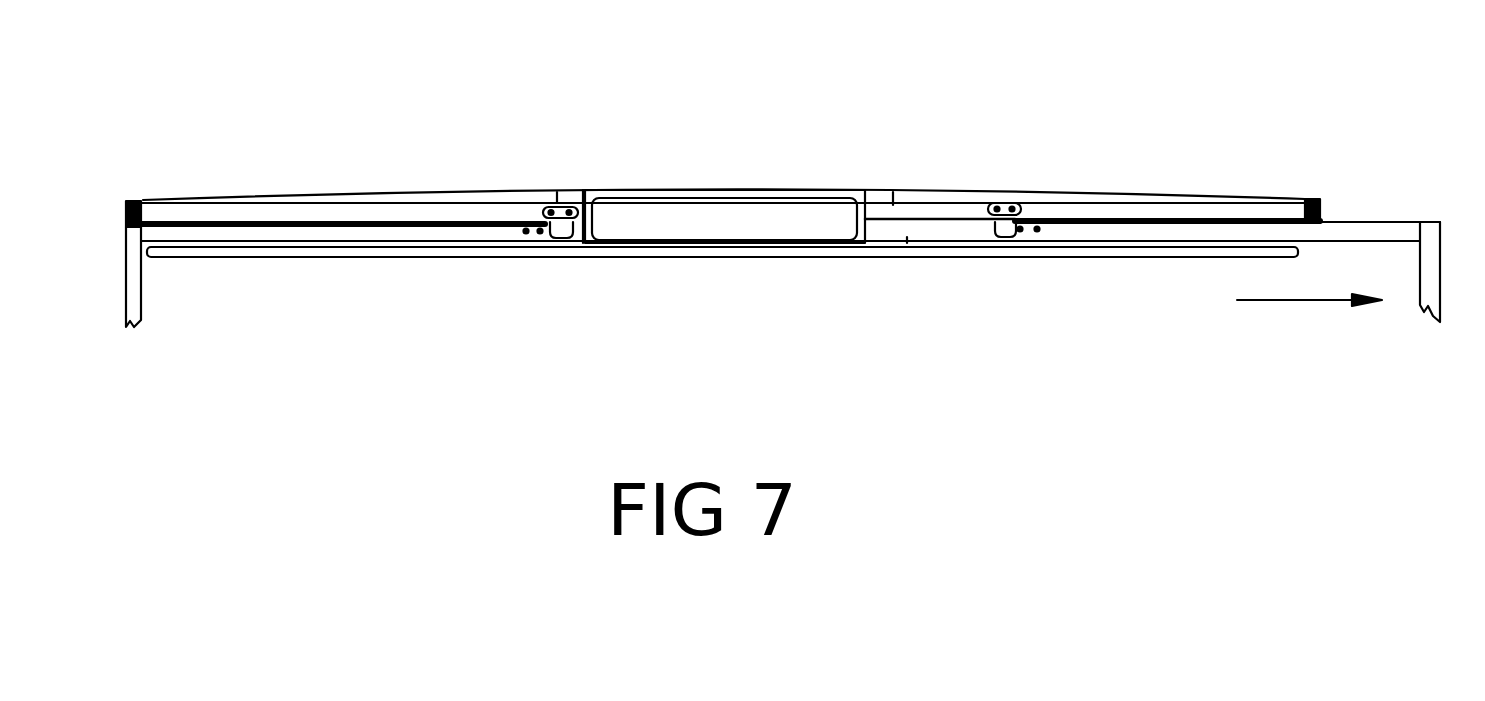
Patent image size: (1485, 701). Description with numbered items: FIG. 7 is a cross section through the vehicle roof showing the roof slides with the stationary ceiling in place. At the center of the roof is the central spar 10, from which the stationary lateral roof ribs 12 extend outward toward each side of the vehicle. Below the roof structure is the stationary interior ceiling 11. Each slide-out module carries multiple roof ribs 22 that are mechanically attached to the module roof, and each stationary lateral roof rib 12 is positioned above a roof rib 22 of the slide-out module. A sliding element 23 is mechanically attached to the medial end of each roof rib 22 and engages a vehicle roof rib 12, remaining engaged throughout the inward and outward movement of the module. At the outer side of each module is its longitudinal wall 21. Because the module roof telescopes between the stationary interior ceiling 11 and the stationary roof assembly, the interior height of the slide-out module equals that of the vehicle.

The central spar 10 is at (630, 218).
The interior ceiling 11 is at (616, 253).
The lateral roof ribs 12 is at (460, 213).
The longitudinal wall 21 is at (1437, 223).
The roof ribs 22 is at (350, 232).
The sliding elements 23 is at (1000, 210).